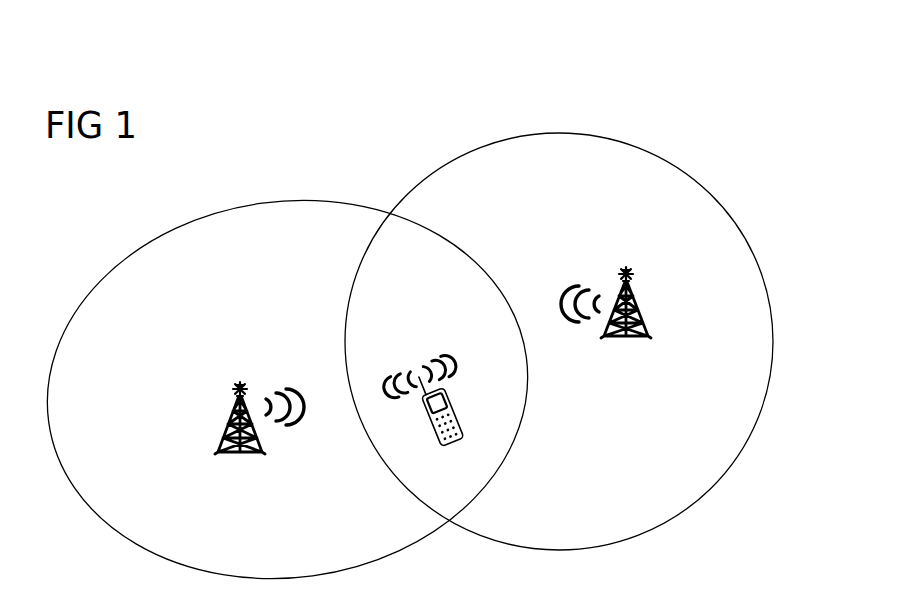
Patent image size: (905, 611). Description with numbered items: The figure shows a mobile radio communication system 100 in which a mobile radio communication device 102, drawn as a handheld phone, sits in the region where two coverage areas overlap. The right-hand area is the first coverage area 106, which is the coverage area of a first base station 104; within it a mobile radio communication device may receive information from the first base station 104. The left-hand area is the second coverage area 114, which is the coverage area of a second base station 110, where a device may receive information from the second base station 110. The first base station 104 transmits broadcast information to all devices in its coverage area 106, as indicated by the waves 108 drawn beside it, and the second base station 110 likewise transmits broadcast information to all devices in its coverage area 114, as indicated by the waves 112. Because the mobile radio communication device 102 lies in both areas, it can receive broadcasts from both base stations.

The mobile radio communication system 100 is at (757, 192).
The mobile radio communication device 102 is at (438, 360).
The first base station 104 is at (638, 293).
The first coverage area 106 is at (748, 298).
The waves 108 is at (570, 290).
The second base station 110 is at (247, 378).
The waves 112 is at (298, 416).
The second coverage area 114 is at (250, 227).